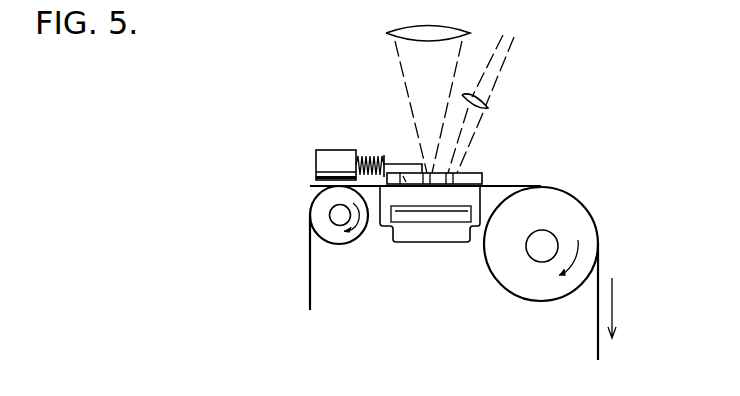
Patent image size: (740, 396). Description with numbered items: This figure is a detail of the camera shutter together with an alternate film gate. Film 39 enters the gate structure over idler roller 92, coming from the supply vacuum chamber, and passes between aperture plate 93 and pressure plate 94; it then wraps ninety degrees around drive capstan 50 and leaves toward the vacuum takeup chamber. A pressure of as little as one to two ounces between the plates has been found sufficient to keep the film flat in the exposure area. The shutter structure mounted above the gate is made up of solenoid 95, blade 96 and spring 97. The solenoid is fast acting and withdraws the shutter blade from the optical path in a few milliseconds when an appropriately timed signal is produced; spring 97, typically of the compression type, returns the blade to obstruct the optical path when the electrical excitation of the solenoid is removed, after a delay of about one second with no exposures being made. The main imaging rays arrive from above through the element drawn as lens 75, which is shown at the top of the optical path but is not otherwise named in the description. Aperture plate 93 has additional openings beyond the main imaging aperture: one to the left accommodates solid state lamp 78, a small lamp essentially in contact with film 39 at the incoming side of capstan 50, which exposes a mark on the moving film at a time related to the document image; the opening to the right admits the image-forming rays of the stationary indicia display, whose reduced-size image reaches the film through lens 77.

The film 39 is at (309, 285).
The drive capstan 50 is at (541, 244).
The lens 75 is at (428, 96).
The lens 77 is at (488, 108).
The solid state lamp 78 is at (405, 181).
The idler roller 92 is at (360, 243).
The aperture plate 93 is at (480, 173).
The pressure plate 94 is at (430, 214).
The solenoid 95 is at (336, 165).
The blade 96 is at (388, 167).
The spring 97 is at (373, 156).